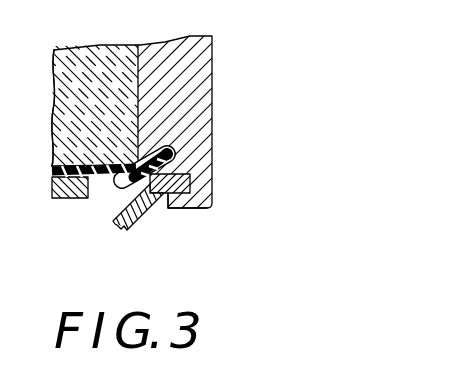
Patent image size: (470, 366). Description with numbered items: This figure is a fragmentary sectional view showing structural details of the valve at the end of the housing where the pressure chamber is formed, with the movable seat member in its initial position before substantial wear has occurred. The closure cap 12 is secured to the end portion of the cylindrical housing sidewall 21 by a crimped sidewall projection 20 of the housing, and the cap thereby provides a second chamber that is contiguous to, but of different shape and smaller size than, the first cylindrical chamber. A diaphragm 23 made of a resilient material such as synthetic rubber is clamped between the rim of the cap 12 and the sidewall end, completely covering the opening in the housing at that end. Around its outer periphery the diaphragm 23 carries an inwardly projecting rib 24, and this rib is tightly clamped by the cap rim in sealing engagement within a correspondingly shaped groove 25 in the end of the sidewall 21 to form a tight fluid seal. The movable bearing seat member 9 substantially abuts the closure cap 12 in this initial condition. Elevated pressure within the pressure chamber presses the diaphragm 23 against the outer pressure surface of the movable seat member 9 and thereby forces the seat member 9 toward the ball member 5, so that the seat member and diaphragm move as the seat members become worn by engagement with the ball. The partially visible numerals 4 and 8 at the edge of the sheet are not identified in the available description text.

The cylindrical housing sidewall 21 is at (213, 83).
The crimped sidewall projection 20 is at (194, 210).
The movable bearing seat member 9 is at (57, 130).
The diaphragm 23 is at (107, 177).
The groove 25 is at (180, 156).
The inwardly projecting rib 24 is at (188, 174).
The closure cap 12 is at (139, 226).
The ball member 5 is at (6, 23).
The element 4 (partially shown) 4 is at (5, 62).
The element 8 (partially shown) 8 is at (6, 93).